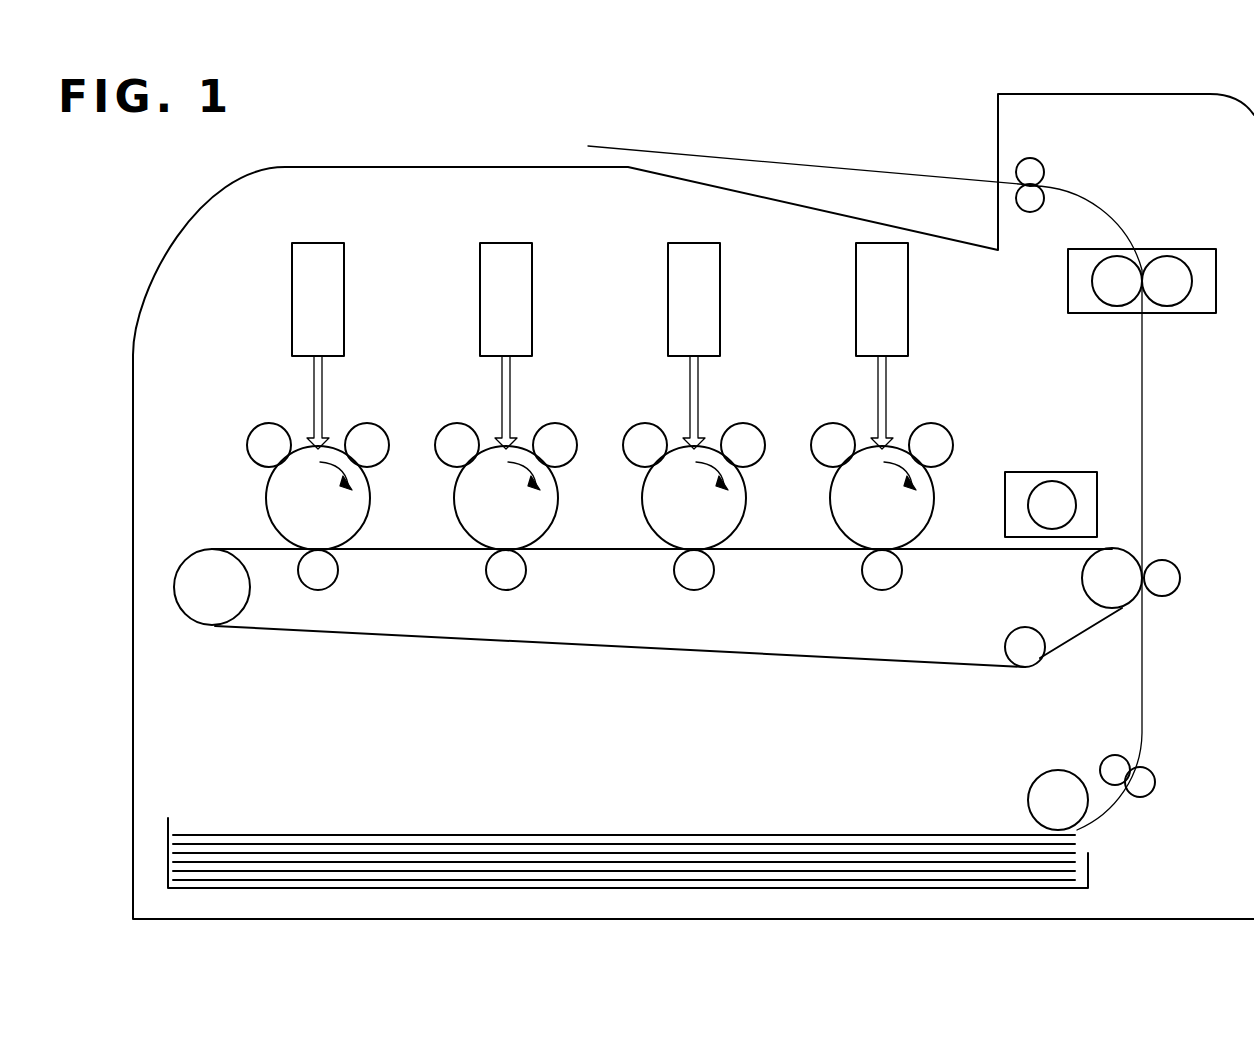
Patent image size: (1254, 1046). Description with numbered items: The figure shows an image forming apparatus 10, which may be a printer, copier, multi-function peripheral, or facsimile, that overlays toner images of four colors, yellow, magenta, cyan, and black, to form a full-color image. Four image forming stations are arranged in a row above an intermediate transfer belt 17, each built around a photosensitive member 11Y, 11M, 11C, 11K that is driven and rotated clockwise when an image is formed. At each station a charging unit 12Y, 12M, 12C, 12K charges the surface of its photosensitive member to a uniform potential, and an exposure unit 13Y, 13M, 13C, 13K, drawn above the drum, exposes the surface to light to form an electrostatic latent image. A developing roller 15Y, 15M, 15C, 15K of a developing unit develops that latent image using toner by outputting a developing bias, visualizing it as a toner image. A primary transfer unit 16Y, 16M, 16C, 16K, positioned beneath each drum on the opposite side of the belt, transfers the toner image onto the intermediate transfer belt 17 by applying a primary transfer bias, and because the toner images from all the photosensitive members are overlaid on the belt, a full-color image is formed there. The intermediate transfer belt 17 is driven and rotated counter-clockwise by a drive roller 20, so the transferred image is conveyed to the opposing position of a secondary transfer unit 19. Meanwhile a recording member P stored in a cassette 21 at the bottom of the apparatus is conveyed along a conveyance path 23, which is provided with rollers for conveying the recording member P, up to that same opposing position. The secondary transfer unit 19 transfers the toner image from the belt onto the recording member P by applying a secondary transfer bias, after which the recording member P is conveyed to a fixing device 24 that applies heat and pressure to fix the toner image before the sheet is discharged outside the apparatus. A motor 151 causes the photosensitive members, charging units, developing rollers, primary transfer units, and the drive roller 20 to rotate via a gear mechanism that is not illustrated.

The image forming apparatus 10 is at (202, 206).
The photosensitive member 11Y is at (336, 533).
The photosensitive member 11M is at (524, 533).
The photosensitive member 11C is at (712, 533).
The photosensitive member 11K is at (900, 533).
The charging unit 12Y is at (264, 433).
The charging unit 12M is at (452, 433).
The charging unit 12C is at (640, 433).
The charging unit 12K is at (828, 433).
The exposure unit 13Y is at (318, 241).
The exposure unit 13M is at (506, 241).
The exposure unit 13C is at (686, 241).
The exposure unit 13K is at (883, 241).
The developing roller 15Y is at (362, 433).
The developing roller 15M is at (550, 433).
The developing roller 15C is at (738, 433).
The developing roller 15K is at (926, 433).
The primary transfer unit 16Y is at (326, 572).
The primary transfer unit 16M is at (514, 572).
The primary transfer unit 16C is at (702, 572).
The primary transfer unit 16K is at (890, 572).
The intermediate transfer belt 17 is at (652, 647).
The secondary transfer unit 19 is at (1168, 585).
The drive roller 20 is at (1092, 585).
The cassette 21 is at (1090, 870).
The conveyance path 23 is at (1142, 683).
The fixing device 24 is at (1198, 262).
The motor 151 is at (1096, 515).
The recording member P is at (702, 833).